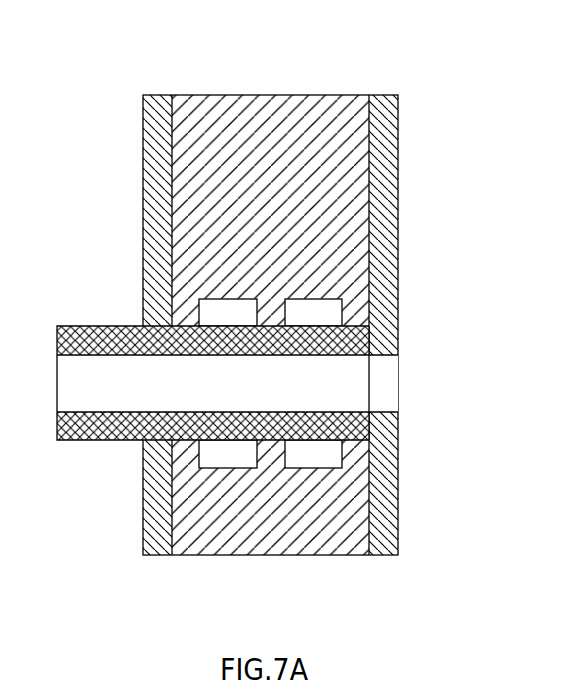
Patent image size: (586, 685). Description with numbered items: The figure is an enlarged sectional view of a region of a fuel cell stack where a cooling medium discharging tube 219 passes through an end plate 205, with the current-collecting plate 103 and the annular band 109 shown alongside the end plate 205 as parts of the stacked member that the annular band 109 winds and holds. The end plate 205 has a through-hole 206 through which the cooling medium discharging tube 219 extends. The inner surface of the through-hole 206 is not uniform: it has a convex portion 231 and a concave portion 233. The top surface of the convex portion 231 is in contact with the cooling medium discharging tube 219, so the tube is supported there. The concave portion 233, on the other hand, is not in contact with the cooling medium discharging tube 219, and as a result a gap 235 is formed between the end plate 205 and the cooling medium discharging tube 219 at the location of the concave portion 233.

The current-collecting plate 103 is at (393, 102).
The annular band 109 is at (164, 104).
The end plate 205 is at (288, 106).
The through-hole 206 is at (234, 520).
The cooling medium discharging tube 219 is at (104, 326).
The convex portion 231 is at (287, 311).
The concave portion 233 is at (323, 317).
The gap 235 is at (313, 456).